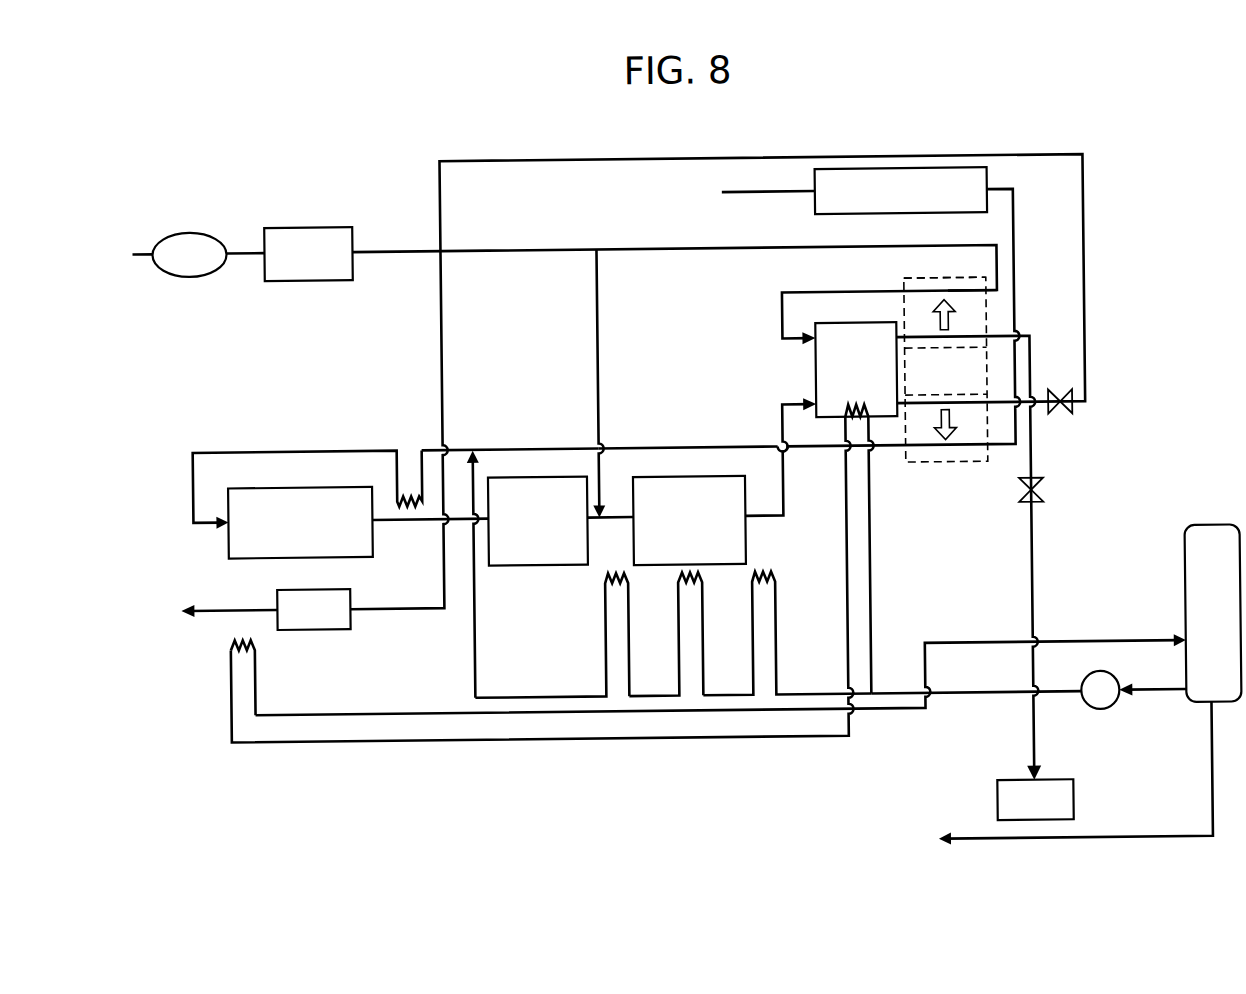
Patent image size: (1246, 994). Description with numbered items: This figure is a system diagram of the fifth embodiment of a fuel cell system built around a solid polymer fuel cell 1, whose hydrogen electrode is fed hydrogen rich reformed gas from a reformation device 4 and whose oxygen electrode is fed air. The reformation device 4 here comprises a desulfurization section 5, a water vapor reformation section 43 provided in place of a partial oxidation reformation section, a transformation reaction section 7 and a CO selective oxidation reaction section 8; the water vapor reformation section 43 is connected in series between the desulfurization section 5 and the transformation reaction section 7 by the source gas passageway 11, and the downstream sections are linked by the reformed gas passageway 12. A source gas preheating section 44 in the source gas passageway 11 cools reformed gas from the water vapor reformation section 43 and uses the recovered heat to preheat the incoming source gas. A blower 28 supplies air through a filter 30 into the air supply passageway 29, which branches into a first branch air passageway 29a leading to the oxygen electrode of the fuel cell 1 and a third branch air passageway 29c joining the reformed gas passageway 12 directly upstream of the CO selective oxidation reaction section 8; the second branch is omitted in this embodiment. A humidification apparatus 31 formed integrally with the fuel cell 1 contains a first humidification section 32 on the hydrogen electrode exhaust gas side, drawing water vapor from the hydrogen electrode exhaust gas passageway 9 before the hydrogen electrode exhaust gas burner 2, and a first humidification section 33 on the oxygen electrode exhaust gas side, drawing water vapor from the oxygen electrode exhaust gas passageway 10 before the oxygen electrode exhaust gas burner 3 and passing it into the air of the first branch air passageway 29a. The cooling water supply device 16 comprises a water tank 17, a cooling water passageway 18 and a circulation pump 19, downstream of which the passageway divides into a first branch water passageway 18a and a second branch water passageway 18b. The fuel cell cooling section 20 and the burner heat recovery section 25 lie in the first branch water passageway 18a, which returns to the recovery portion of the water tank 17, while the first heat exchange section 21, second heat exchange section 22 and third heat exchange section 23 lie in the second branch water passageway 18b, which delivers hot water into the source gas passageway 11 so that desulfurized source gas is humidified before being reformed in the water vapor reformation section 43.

The fuel cell 1 is at (815, 380).
The hydrogen electrode exhaust gas burner 2 is at (318, 626).
The oxygen electrode exhaust gas burner 3 is at (1071, 802).
The reformation device 4 is at (495, 418).
The desulfurization section 5 is at (905, 171).
The transformation reaction section 7 is at (538, 476).
The CO selective oxidation reaction section 8 is at (684, 477).
The hydrogen electrode exhaust gas passageway 9 is at (913, 452).
The oxygen electrode exhaust gas passageway 10 is at (905, 281).
The source gas passageway 11 is at (760, 192).
The reformed gas passageway 12 is at (433, 518).
The cooling water supply device 16 is at (1156, 503).
The water tank 17 is at (1200, 708).
The cooling water passageway 18 is at (972, 703).
The first branch water passageway 18a is at (786, 740).
The second branch water passageway 18b is at (539, 712).
The circulation pump 19 is at (1101, 714).
The fuel cell cooling section 20 is at (846, 424).
The first heat exchange section 21 is at (766, 582).
The second heat exchange section 22 is at (693, 582).
The third heat exchange section 23 is at (620, 582).
The burner heat recovery section 25 is at (231, 650).
The blower 28 is at (190, 228).
The air supply passageway 29 is at (556, 242).
The first branch air passageway 29a is at (972, 292).
The third branch air passageway 29c is at (597, 327).
The filter 30 is at (308, 224).
The humidification apparatus 31 is at (997, 311).
The first humidification section on the hydrogen electrode exhaust gas side 32 is at (949, 466).
The first humidification section on the oxygen electrode exhaust gas side 33 is at (939, 352).
The water vapor reformation section 43 is at (323, 484).
The source gas preheating section 44 is at (400, 505).